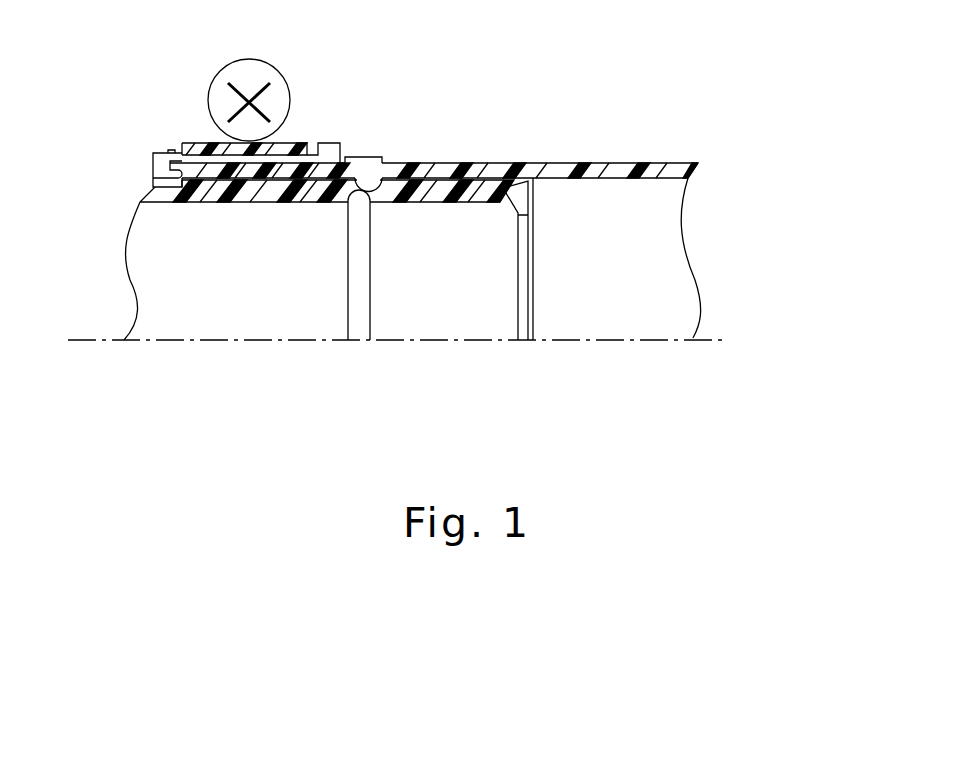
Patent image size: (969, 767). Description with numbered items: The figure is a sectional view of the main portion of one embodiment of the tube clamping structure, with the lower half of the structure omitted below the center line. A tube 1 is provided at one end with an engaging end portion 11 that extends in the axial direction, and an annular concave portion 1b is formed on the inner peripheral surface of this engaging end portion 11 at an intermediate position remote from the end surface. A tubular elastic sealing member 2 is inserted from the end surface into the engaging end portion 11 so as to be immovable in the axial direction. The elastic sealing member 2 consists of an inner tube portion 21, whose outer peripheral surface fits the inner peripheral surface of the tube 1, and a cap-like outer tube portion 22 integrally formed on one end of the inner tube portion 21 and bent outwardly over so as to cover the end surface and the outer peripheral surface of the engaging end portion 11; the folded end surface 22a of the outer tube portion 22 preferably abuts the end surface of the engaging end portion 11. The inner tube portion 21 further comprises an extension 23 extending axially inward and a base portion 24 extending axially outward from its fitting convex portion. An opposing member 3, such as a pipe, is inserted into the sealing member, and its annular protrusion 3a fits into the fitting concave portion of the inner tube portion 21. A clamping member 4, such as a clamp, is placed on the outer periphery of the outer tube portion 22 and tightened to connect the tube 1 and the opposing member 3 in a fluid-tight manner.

The tube 1 is at (600, 150).
The annular concave portion 1b is at (403, 165).
The engaging end portion 11 is at (490, 170).
The elastic sealing member 2 is at (157, 142).
The outer tube portion 22 is at (188, 163).
The folded end surface 22a is at (151, 178).
The opposing member 3 is at (141, 188).
The annular protrusion 3a is at (347, 287).
The clamping member 4 is at (258, 43).
The inner tube portion 21 is at (203, 203).
The extension 23 is at (428, 193).
The base portion 24 is at (258, 192).